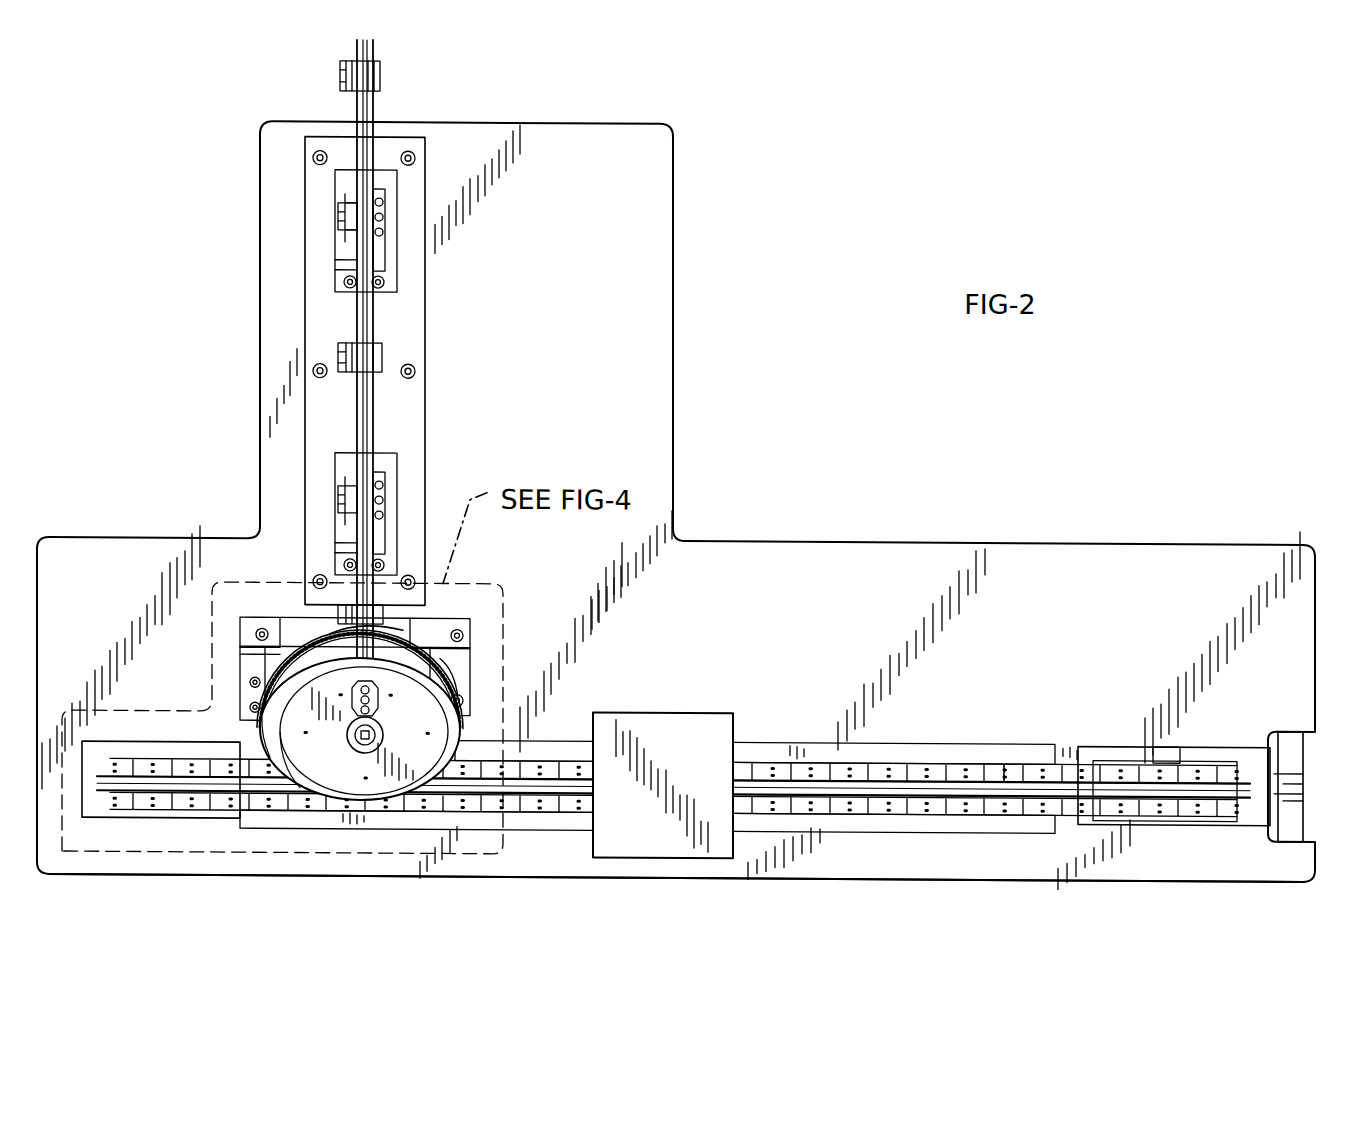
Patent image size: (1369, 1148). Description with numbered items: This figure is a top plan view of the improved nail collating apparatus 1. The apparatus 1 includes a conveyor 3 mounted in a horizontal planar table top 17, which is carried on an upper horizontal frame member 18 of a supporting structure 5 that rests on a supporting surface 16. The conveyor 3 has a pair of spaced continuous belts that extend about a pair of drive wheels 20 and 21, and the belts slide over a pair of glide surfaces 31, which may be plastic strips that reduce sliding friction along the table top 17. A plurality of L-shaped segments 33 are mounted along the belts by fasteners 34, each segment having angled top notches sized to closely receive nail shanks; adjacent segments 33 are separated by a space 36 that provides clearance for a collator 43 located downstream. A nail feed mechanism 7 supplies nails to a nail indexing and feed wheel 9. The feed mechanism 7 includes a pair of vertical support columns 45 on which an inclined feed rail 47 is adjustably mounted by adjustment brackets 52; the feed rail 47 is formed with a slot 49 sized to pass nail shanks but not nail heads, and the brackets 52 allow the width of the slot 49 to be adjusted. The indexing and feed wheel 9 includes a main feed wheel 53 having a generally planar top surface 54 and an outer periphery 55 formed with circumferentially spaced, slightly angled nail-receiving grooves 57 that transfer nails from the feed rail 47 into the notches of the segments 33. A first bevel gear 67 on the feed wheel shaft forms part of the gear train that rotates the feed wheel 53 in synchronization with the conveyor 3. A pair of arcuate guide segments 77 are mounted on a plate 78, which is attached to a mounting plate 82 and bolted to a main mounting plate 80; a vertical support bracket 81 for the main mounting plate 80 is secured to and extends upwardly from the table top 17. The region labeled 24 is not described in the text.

The apparatus 1 is at (812, 452).
The conveyor 3 is at (1222, 834).
The supporting structure 5 is at (680, 188).
The nail feed mechanism 7 is at (390, 318).
The nail indexing and feed wheel 9 is at (272, 655).
The supporting surface 16 is at (632, 264).
The table top 17 is at (640, 325).
The upper horizontal frame member 18 is at (1297, 815).
The drive wheel 20 is at (1112, 758).
The drive wheel 21 is at (152, 822).
The region shown in FIG. 4 24 is at (183, 750).
The glide surfaces 31 is at (770, 745).
The L-shaped segments 33 is at (953, 768).
The fasteners 34 is at (1003, 770).
The space 36 is at (470, 788).
The collator 43 is at (671, 706).
The vertical support columns 45 is at (335, 188).
The feed rail 47 is at (373, 435).
The slot 49 is at (367, 397).
The adjustment brackets 52 is at (381, 76).
The main feed wheel 53 is at (392, 790).
The top surface 54 is at (332, 780).
The outer periphery 55 is at (443, 682).
The nail-receiving grooves 57 is at (412, 658).
The first bevel gear 67 is at (403, 631).
The arcuate guide segments 77 is at (310, 664).
The plate 78 is at (261, 730).
The main mounting plate 80 is at (245, 664).
The vertical support bracket 81 is at (307, 628).
The mounting plate 82 is at (245, 695).